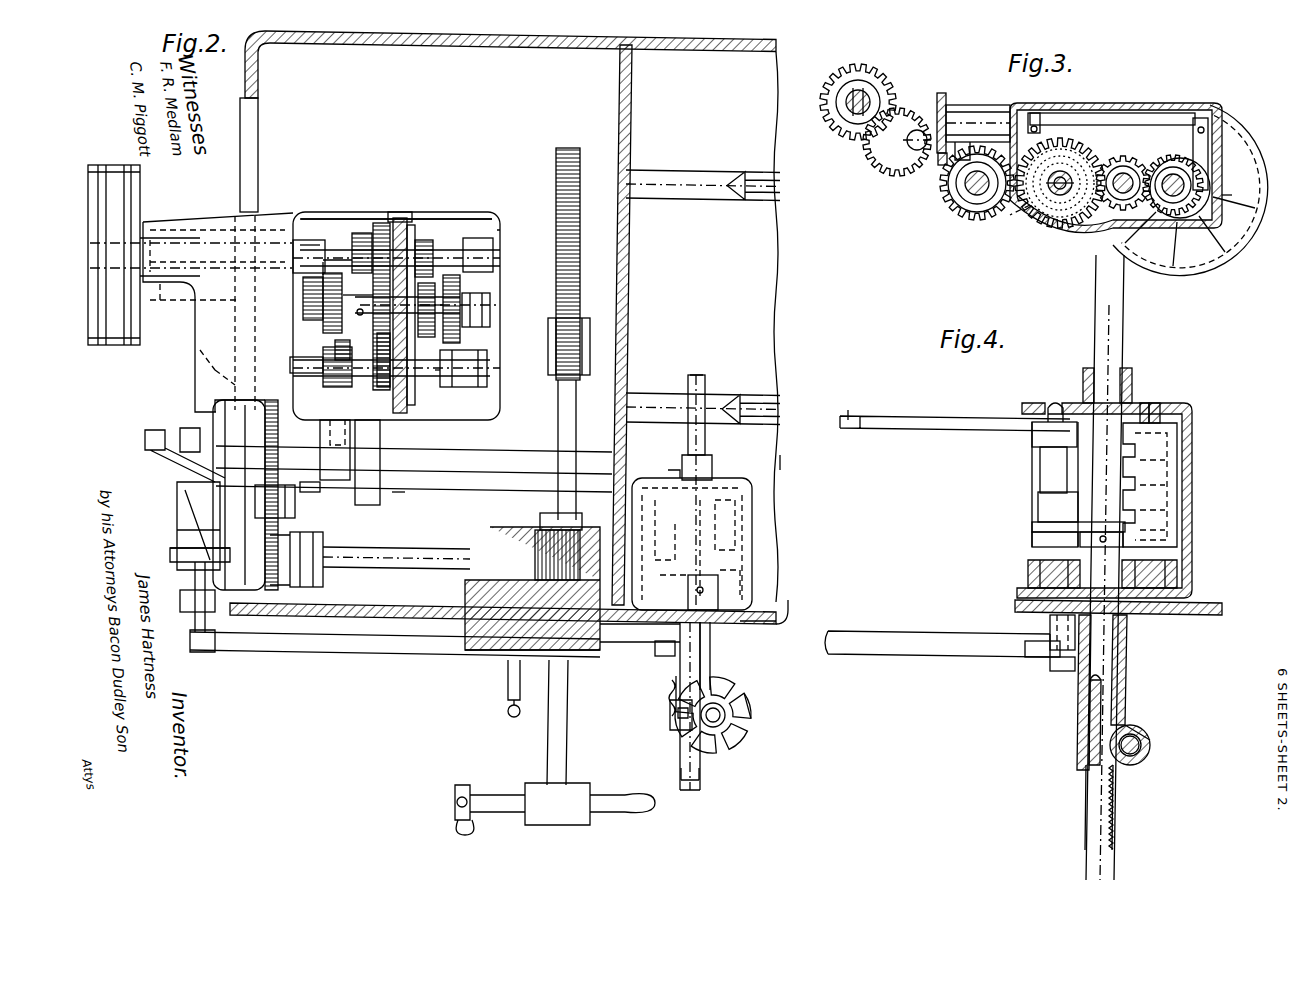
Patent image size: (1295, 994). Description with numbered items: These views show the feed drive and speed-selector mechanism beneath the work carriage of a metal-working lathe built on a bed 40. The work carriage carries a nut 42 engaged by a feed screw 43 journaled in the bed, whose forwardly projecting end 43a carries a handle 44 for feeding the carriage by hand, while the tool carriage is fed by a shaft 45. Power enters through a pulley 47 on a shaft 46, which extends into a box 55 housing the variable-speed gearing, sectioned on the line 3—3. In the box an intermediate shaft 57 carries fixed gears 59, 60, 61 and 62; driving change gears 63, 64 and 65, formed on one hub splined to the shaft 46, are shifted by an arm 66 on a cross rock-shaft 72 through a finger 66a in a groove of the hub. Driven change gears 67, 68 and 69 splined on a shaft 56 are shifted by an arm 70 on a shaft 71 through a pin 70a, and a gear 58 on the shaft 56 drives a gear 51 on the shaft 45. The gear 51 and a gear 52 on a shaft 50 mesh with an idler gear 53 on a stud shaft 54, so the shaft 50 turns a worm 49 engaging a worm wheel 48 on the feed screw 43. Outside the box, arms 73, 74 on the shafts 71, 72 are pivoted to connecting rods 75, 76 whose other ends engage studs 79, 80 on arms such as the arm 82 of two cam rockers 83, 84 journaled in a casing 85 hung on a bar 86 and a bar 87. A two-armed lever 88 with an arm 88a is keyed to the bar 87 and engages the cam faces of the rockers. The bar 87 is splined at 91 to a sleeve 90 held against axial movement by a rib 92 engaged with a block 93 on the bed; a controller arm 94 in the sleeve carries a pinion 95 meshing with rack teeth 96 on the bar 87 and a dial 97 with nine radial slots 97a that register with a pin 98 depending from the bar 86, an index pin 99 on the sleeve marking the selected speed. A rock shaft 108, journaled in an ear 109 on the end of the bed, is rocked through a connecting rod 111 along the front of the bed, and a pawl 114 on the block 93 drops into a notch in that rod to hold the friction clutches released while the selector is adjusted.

In FIG. 2, the section line 3 is at (404, 212).
In FIG. 2, the bed 40 is at (776, 612).
In FIG. 4, the bed 40 is at (1185, 616).
In FIG. 2, the nut 42 is at (556, 342).
In FIG. 2, the feed screw 43 is at (556, 203).
In FIG. 2, the forwardly projecting end 43a is at (548, 746).
In FIG. 2, the handle 44 is at (602, 812).
In FIG. 2, the shaft 45 is at (798, 470).
In FIG. 3, the shaft 45 is at (972, 192).
In FIG. 2, the shaft 46 is at (318, 197).
In FIG. 3, the shaft 46 is at (1168, 215).
In FIG. 2, the pulley 47 is at (122, 200).
In FIG. 2, the worm wheel 48 is at (522, 530).
In FIG. 2, the worm 49 is at (495, 548).
In FIG. 2, the shaft 50 is at (420, 568).
In FIG. 3, the shaft 50 is at (846, 104).
In FIG. 2, the gear 51 is at (278, 455).
In FIG. 3, the gear 51 is at (966, 216).
In FIG. 2, the gear 52 is at (290, 556).
In FIG. 3, the gear 52 is at (870, 128).
In FIG. 2, the intermediate idler gear 53 is at (295, 500).
In FIG. 3, the intermediate idler gear 53 is at (942, 178).
In FIG. 2, the stud shaft 54 is at (215, 500).
In FIG. 3, the stud shaft 54 is at (907, 146).
In FIG. 2, the box 55 is at (450, 217).
In FIG. 3, the box 55 is at (1212, 140).
In FIG. 2, the shaft 56 is at (487, 373).
In FIG. 3, the shaft 56 is at (1050, 200).
In FIG. 2, the intermediate shaft 57 is at (490, 310).
In FIG. 3, the intermediate shaft 57 is at (1118, 202).
In FIG. 2, the gear 58 is at (252, 318).
In FIG. 2, the fixed gear 59 is at (325, 258).
In FIG. 2, the fixed gear 60 is at (370, 292).
In FIG. 3, the fixed gear 60 is at (1124, 168).
In FIG. 2, the fixed gear 61 is at (425, 337).
In FIG. 2, the fixed gear 62 is at (438, 380).
In FIG. 2, the driving change gear 63 is at (362, 232).
In FIG. 2, the driving change gear 64 is at (381, 223).
In FIG. 3, the driving change gear 64 is at (1173, 166).
In FIG. 2, the driving change gear 65 is at (422, 248).
In FIG. 2, the arm 66 is at (399, 217).
In FIG. 3, the arm 66 is at (1212, 152).
In FIG. 3, the finger 66a is at (1228, 205).
In FIG. 2, the driven change gear 67 is at (376, 355).
In FIG. 3, the driven change gear 67 is at (1020, 220).
In FIG. 2, the driven change gear 68 is at (342, 420).
In FIG. 3, the driven change gear 68 is at (1056, 218).
In FIG. 3, the driven change gear 69 is at (1063, 225).
In FIG. 2, the arm 70 is at (328, 384).
In FIG. 3, the arm 70 is at (1040, 140).
In FIG. 2, the pin 70a is at (334, 358).
In FIG. 3, the pin 70a is at (1020, 235).
In FIG. 2, the shaft 71 is at (360, 480).
In FIG. 2, the cross rock-shaft 72 is at (414, 240).
In FIG. 3, the cross rock-shaft 72 is at (1105, 114).
In FIG. 2, the arm 73 is at (330, 487).
In FIG. 3, the arm 73 is at (966, 142).
In FIG. 2, the arm 74 is at (410, 490).
In FIG. 3, the arm 74 is at (952, 108).
In FIG. 3, the connecting rod 75 is at (937, 160).
In FIG. 4, the connecting rod 75 is at (1148, 396).
In FIG. 2, the connecting rod 76 is at (476, 488).
In FIG. 3, the connecting rod 76 is at (937, 112).
In FIG. 4, the connecting rod 76 is at (947, 420).
In FIG. 4, the stud 79 is at (1160, 410).
In FIG. 4, the stud 80 is at (1052, 402).
In FIG. 2, the arm 82 is at (680, 470).
In FIG. 4, the arm 82 is at (1034, 437).
In FIG. 4, the cam rocker 83 is at (1177, 472).
In FIG. 4, the cam rocker 84 is at (1040, 488).
In FIG. 2, the casing 85 is at (752, 545).
In FIG. 4, the casing 85 is at (1192, 540).
In FIG. 2, the bar 86 is at (700, 652).
In FIG. 2, the bar 87 is at (706, 436).
In FIG. 3, the bar 87 is at (1109, 280).
In FIG. 4, the bar 87 is at (1115, 356).
In FIG. 4, the two-armed lever 88 is at (1125, 536).
In FIG. 4, the arm 88a is at (1057, 520).
In FIG. 2, the sleeve 90 is at (710, 668).
In FIG. 4, the sleeve 90 is at (1127, 672).
In FIG. 4, the spline 91 is at (1080, 735).
In FIG. 2, the rib 92 is at (655, 650).
In FIG. 4, the rib 92 is at (1056, 668).
In FIG. 4, the block 93 is at (1050, 632).
In FIG. 2, the controller arm 94 is at (726, 716).
In FIG. 4, the controller arm 94 is at (1140, 728).
In FIG. 4, the pinion 95 is at (1131, 766).
In FIG. 2, the rack teeth 96 is at (705, 770).
In FIG. 4, the rack teeth 96 is at (1112, 815).
In FIG. 2, the dial 97 is at (722, 745).
In FIG. 2, the radial slot 97a is at (767, 698).
In FIG. 2, the pin 98 is at (670, 720).
In FIG. 2, the index pin 99 is at (671, 688).
In FIG. 2, the rock shaft 108 is at (196, 584).
In FIG. 2, the ear 109 is at (192, 608).
In FIG. 2, the connecting rod 111 is at (285, 648).
In FIG. 4, the connecting rod 111 is at (916, 656).
In FIG. 2, the pawl 114 is at (640, 631).
In FIG. 4, the pawl 114 is at (1035, 654).